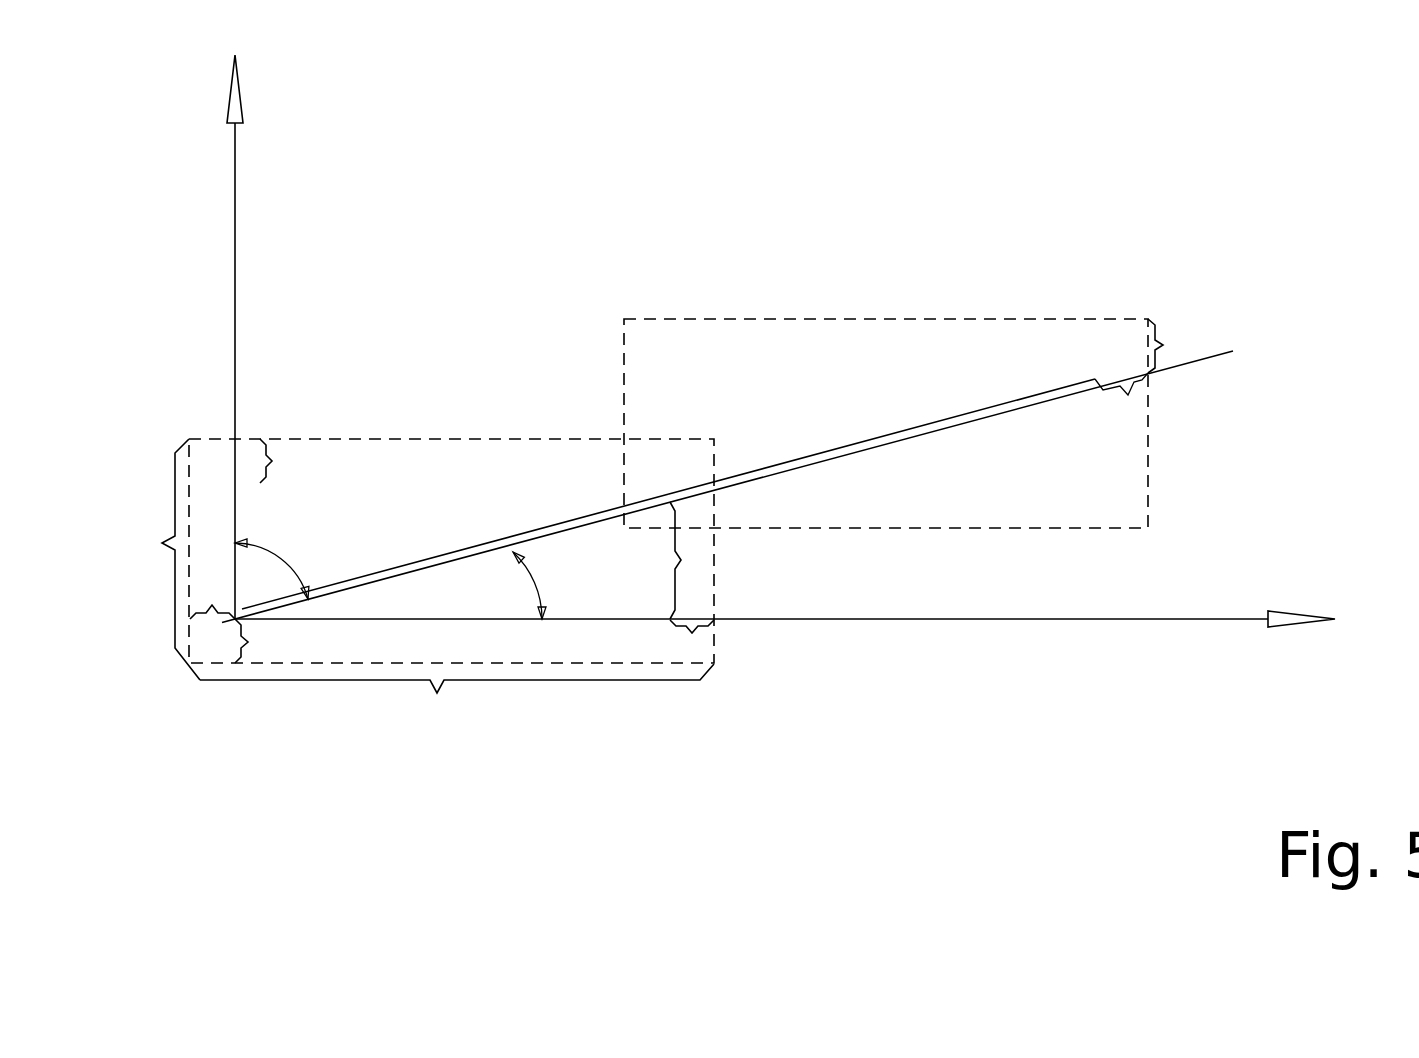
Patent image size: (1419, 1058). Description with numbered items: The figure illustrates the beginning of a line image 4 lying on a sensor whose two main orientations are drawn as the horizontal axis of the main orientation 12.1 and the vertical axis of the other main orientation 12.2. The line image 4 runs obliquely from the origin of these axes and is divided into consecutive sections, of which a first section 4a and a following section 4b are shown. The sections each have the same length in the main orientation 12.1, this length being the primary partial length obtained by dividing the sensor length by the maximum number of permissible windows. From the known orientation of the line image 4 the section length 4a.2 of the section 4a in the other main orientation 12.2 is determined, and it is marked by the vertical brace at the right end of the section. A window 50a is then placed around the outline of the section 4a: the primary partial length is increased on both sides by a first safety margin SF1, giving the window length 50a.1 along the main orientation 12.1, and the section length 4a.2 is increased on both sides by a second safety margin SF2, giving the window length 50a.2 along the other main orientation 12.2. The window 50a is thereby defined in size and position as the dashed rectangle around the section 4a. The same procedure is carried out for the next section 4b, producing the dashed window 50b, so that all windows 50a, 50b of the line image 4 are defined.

The line image 4 is at (727, 388).
The section 4a is at (449, 553).
The section 4b is at (882, 437).
The section length 4a.2 is at (707, 560).
The main orientation 12.1 is at (785, 641).
The main orientation 12.2 is at (195, 337).
The window 50a is at (509, 455).
The window 50b is at (793, 318).
The window length 50a.1 is at (457, 697).
The window length 50a.2 is at (140, 559).
The first safety margin SF1 is at (212, 605).
The second safety margin SF2 is at (282, 551).